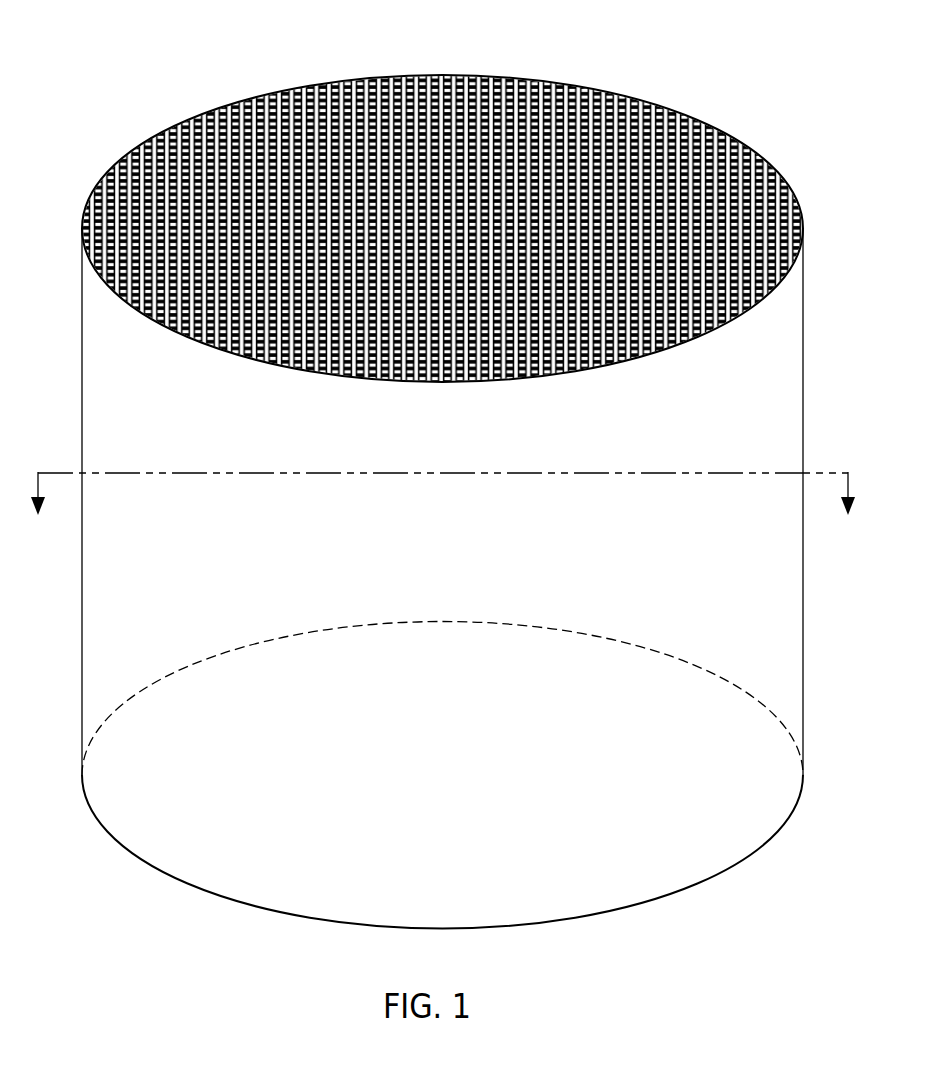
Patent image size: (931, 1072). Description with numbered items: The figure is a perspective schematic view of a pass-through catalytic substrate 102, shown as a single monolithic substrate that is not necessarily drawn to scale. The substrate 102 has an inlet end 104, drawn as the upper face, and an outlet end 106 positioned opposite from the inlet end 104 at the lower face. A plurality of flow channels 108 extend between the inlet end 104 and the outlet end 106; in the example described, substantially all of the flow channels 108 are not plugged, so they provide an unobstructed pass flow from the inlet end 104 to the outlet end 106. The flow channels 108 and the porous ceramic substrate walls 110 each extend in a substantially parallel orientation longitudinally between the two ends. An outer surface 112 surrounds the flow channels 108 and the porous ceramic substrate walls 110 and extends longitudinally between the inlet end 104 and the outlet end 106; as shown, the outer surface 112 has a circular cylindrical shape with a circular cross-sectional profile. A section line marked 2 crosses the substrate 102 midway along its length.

The pass-through catalytic substrate 102 is at (447, 475).
The inlet end 104 is at (442, 202).
The outlet end 106 is at (163, 872).
The flow channels 108 is at (558, 102).
The porous ceramic substrate walls 110 is at (500, 88).
The outer surface 112 is at (82, 282).
The section line 2- 2 is at (442, 516).